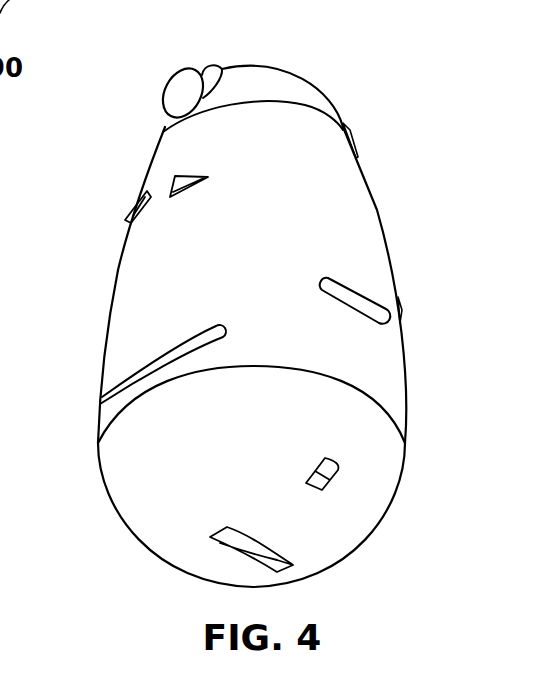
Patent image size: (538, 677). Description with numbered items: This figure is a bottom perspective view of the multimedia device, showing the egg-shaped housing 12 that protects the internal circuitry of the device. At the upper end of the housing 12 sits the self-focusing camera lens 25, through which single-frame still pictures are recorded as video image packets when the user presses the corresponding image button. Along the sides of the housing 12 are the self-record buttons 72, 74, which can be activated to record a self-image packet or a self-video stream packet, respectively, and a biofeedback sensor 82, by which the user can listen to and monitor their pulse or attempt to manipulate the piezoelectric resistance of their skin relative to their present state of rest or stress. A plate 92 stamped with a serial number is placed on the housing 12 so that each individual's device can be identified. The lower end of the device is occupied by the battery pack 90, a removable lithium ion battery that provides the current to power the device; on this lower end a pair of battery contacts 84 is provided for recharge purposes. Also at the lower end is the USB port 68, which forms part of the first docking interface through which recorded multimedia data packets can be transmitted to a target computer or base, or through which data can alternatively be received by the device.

The housing 12 is at (107, 315).
The self-focusing camera lens 25 is at (183, 77).
The USB port 68 is at (227, 540).
The self-record button 72 is at (140, 207).
The self-record button 74 is at (187, 177).
The biofeedback sensor 82 is at (345, 287).
The battery contacts 84 is at (327, 478).
The battery pack 90 is at (264, 429).
The plate 92 is at (163, 340).